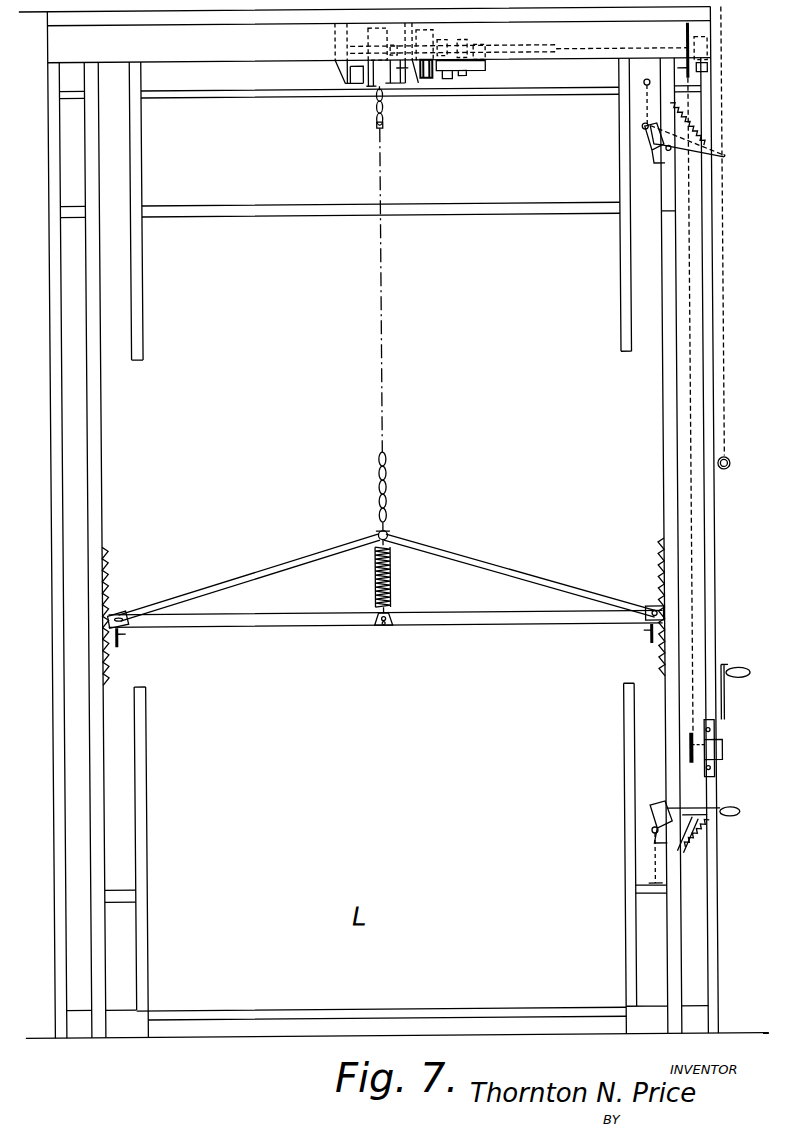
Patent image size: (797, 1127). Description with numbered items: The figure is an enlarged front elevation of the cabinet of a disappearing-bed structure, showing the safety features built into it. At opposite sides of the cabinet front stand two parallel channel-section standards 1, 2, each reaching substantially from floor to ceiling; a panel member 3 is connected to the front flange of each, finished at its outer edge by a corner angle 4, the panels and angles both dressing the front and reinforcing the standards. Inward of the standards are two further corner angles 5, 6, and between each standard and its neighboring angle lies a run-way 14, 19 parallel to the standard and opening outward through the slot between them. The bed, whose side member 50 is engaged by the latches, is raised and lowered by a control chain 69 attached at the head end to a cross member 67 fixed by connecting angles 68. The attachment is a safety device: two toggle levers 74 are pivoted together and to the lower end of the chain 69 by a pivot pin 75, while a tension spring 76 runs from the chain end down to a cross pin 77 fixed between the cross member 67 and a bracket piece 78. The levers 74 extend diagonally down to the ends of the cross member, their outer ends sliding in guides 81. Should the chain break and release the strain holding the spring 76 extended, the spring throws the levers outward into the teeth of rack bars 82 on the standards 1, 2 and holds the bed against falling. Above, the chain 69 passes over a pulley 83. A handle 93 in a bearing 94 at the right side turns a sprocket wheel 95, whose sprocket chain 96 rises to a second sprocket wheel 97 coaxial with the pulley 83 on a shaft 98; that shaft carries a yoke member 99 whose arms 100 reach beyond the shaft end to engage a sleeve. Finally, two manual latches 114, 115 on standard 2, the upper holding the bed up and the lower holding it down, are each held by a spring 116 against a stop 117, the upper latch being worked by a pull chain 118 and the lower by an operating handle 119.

The standard 1 is at (88, 430).
The standard 2 is at (676, 392).
The panel member 3 is at (73, 798).
The corner angle 4 is at (55, 762).
The corner angle 5 is at (142, 329).
The corner angle 6 is at (622, 336).
The run-way 14 is at (110, 852).
The run-way 19 is at (639, 702).
The side member 50 is at (650, 96).
The cross member 67 is at (300, 626).
The connecting angle 68 is at (119, 637).
The control cable or chain 69 is at (391, 121).
The toggle lever 74 is at (387, 573).
The pivot pin 75 is at (387, 532).
The tension spring 76 is at (390, 580).
The cross pin 77 is at (385, 626).
The bracket piece 78 is at (392, 620).
The guide 81 is at (108, 620).
The rack bar 82 is at (102, 592).
The pulley 83 is at (380, 78).
The handle 93 is at (743, 680).
The bearing 94 is at (712, 772).
The sprocket wheel 95 is at (686, 750).
The sprocket chain 96 is at (694, 282).
The sprocket wheel 97 is at (696, 77).
The shaft 98 is at (536, 60).
The yoke member 99 is at (484, 62).
The arm 100 is at (455, 63).
The latch 114 is at (685, 154).
The latch 115 is at (700, 826).
The spring 116 is at (694, 120).
The stop 117 is at (659, 154).
The pull chain 118 is at (726, 347).
The operating handle 119 is at (750, 806).